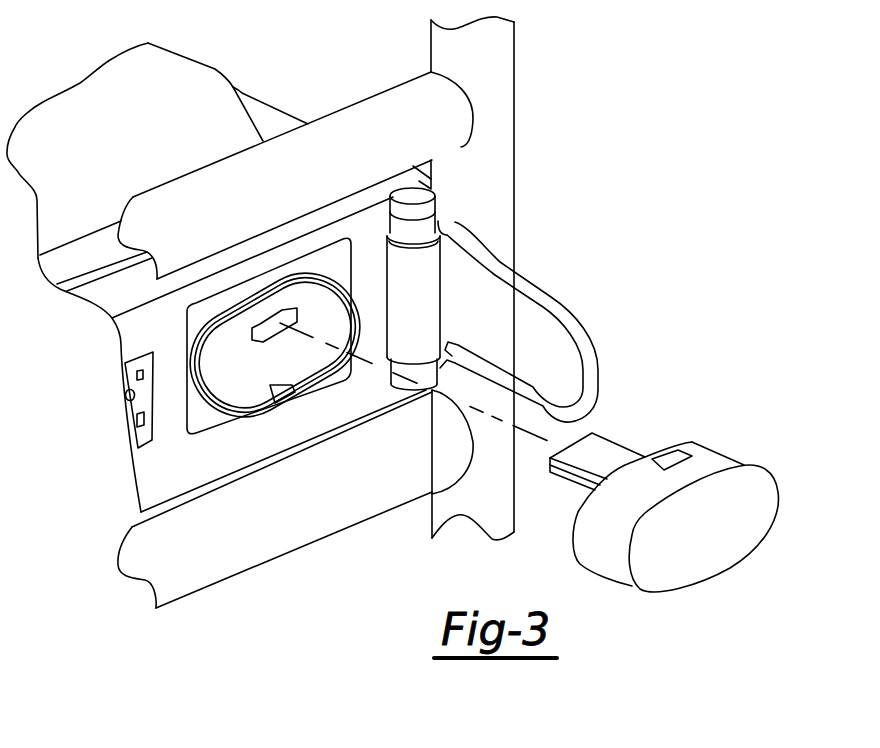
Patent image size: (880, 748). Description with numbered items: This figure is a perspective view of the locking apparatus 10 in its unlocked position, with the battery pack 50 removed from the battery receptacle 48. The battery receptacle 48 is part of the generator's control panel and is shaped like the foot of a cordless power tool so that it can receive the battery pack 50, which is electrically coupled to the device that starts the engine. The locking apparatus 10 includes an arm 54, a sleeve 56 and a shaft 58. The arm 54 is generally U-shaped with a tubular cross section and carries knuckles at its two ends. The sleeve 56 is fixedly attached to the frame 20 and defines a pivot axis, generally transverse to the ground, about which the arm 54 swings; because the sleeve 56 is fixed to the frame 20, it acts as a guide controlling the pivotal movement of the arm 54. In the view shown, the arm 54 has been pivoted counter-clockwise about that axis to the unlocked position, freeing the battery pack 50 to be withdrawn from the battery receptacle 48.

The locking apparatus 10 is at (566, 277).
The frame 20 is at (503, 63).
The battery receptacle 48 is at (255, 393).
The battery pack 50 is at (715, 457).
The arm 54 is at (592, 380).
The sleeve 56 is at (423, 335).
The shaft 58 is at (423, 217).